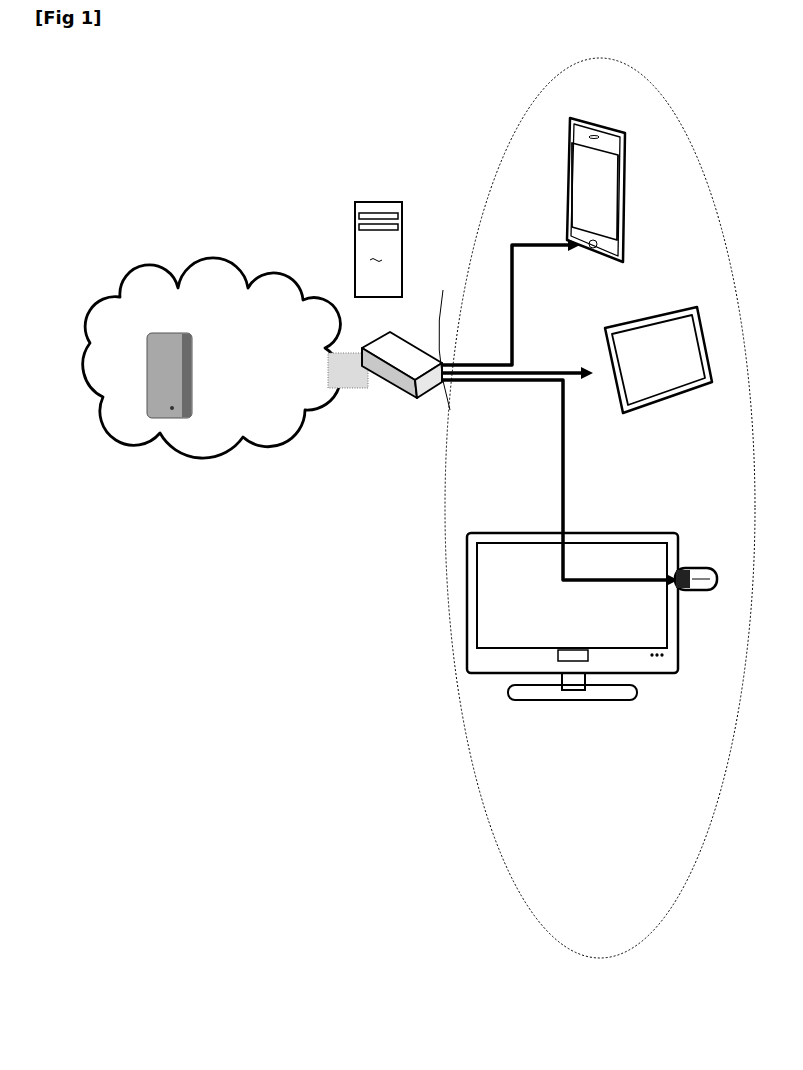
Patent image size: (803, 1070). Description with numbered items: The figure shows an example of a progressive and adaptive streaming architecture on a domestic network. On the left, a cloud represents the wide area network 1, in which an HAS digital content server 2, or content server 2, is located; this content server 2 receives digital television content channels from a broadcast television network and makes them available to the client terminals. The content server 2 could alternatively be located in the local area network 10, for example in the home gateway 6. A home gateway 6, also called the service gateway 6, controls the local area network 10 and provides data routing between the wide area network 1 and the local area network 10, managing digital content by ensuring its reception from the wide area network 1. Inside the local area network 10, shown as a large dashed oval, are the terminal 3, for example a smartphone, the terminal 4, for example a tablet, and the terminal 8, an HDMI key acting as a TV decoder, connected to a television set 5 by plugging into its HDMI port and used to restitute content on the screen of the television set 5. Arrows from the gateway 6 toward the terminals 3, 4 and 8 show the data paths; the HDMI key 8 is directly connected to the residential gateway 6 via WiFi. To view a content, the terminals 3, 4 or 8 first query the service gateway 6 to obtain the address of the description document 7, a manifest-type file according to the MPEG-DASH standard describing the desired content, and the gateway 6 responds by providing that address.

The wide area network 1 is at (212, 342).
The content server 2 is at (198, 332).
The terminal 3 is at (608, 140).
The terminal 4 is at (697, 323).
The television set 5 is at (592, 657).
The home gateway 6 is at (406, 350).
The description document 7 is at (396, 246).
The HDMI key 8 is at (700, 597).
The local area network 10 is at (442, 595).